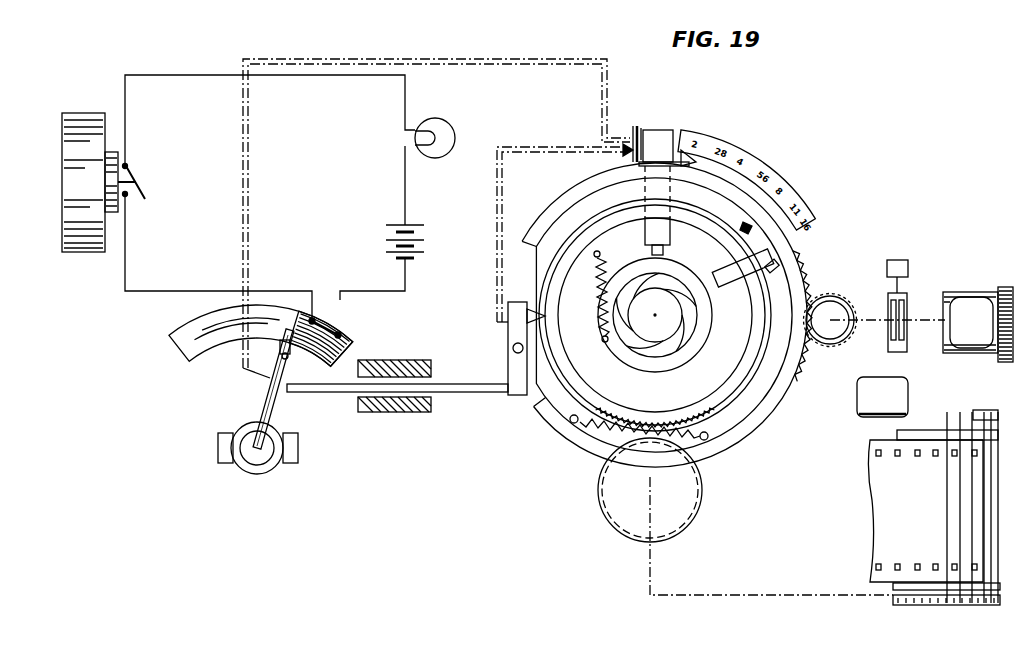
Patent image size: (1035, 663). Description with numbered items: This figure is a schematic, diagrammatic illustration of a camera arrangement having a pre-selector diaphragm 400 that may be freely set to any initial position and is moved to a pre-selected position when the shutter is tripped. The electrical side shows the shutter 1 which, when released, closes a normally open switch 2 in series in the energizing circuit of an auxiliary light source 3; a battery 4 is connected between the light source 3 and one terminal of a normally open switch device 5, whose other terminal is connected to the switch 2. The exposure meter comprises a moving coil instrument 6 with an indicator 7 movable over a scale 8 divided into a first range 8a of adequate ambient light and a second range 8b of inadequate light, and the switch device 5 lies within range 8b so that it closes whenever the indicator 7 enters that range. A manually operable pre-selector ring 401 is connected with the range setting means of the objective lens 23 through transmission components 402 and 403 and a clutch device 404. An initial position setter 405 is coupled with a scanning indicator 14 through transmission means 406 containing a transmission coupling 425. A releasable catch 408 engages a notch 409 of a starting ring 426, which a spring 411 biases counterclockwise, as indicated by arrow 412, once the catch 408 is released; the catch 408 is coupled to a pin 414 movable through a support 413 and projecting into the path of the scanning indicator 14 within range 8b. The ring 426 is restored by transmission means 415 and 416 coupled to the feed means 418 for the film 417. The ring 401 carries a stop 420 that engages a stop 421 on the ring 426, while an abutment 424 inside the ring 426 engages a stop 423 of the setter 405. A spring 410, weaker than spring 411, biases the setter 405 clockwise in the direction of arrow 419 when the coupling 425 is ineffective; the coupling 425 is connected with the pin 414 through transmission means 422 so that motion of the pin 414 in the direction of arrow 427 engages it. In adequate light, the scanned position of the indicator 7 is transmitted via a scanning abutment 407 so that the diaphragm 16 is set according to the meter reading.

The shutter 1 is at (72, 143).
The normally open switch 2 is at (139, 186).
The auxiliary light source 3 is at (442, 128).
The battery 4 is at (416, 232).
The switch device 5 is at (322, 312).
The moving coil instrument 6 is at (222, 446).
The indicator 7 is at (279, 405).
The scale 8 is at (195, 307).
The first range 8a is at (186, 347).
The second range 8b is at (350, 344).
The scanning indicator 14 is at (268, 393).
The diaphragm 16 is at (634, 346).
The objective lens 23 is at (972, 300).
The pre-selector diaphragm 400 is at (798, 250).
The pre-selector ring 401 is at (762, 412).
The transmission component 402 is at (826, 344).
The transmission component 403 is at (882, 320).
The clutch device 404 is at (905, 296).
The initial position setter 405 is at (665, 128).
The transmission means 406 is at (490, 64).
The scanning abutment 407 is at (268, 350).
The releasable catch 408 is at (508, 306).
The notch 409 is at (546, 318).
The spring 410 is at (585, 296).
The spring 411 is at (592, 426).
The arrow 412 is at (756, 338).
The support 413 is at (420, 362).
The pin 414 is at (466, 383).
The transmission means 415 is at (612, 472).
The transmission means 416 is at (718, 594).
The film 417 is at (986, 492).
The feed means 418 is at (906, 393).
The arrow 419 is at (633, 264).
The stop 420 is at (748, 224).
The stop 421 is at (775, 272).
The transmission means 422 is at (545, 146).
The stop 423 is at (664, 249).
The abutment 424 is at (727, 290).
The transmission coupling 425 is at (636, 126).
The starting ring 426 is at (720, 442).
The arrow 427 is at (414, 424).